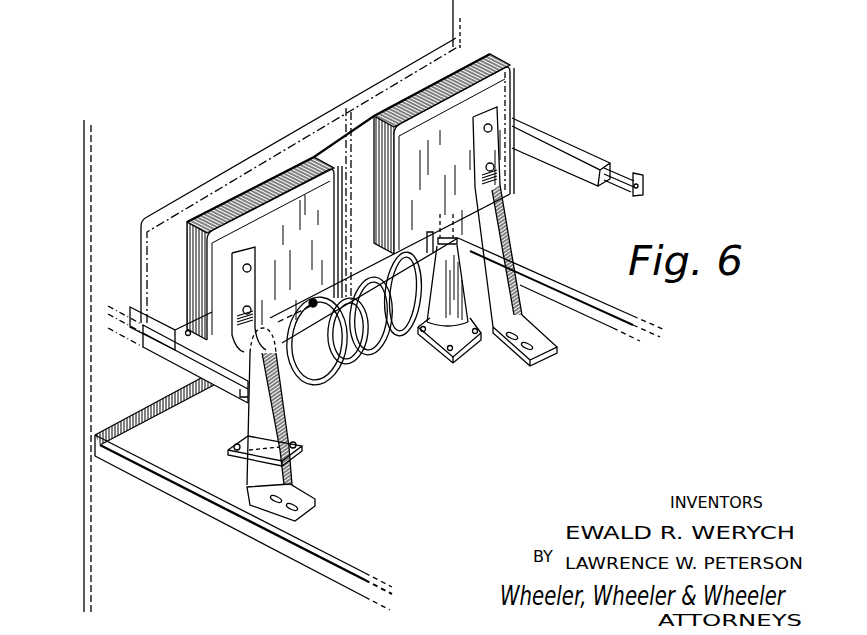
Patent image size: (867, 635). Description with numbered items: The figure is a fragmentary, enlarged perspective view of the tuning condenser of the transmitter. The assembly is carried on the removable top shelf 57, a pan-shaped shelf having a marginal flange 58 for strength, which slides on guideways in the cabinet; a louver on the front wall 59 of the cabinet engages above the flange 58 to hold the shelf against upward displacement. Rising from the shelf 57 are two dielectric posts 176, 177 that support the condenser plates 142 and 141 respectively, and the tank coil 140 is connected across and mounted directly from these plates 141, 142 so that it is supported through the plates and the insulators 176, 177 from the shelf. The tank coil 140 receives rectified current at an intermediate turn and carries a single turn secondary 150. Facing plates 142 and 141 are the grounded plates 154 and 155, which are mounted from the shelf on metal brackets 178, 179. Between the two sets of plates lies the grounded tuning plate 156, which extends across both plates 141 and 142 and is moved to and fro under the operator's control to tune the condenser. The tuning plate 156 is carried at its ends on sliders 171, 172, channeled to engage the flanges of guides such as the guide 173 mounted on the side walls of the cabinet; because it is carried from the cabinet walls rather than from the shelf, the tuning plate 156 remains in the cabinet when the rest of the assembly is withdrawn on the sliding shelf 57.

The removable top shelf 57 is at (338, 544).
The marginal flange 58 is at (245, 522).
The front wall 59 is at (97, 385).
The tank coil 140 is at (402, 345).
The condenser plate 141 is at (240, 213).
The condenser plate 142 is at (498, 58).
The single turn secondary 150 is at (357, 373).
The grounded plate 154 is at (500, 88).
The grounded plate 155 is at (280, 213).
The tuning plate 156 is at (350, 143).
The slider 171 is at (543, 138).
The slider 172 is at (212, 366).
The guide 173 is at (622, 170).
The dielectric post 176 is at (455, 318).
The dielectric post 177 is at (288, 409).
The metal bracket 178 is at (507, 288).
The metal bracket 179 is at (265, 473).